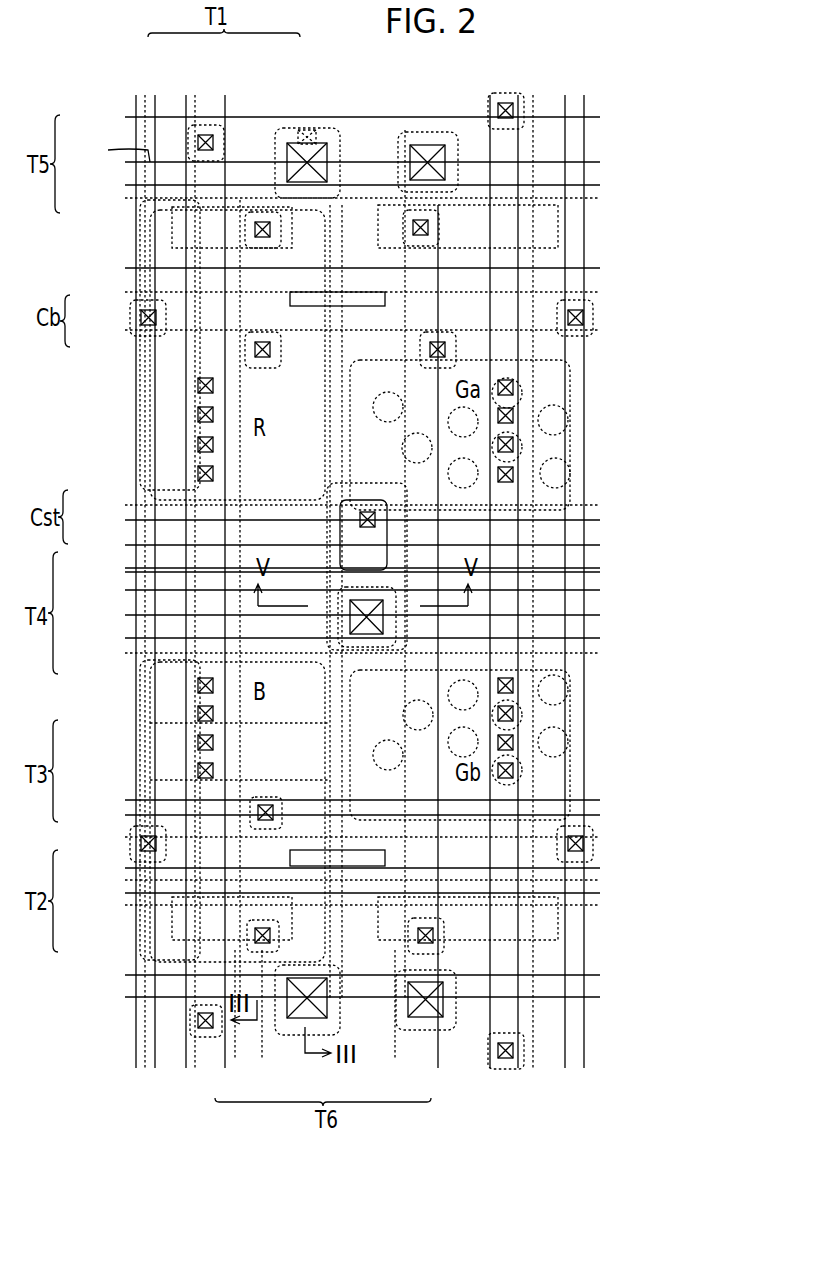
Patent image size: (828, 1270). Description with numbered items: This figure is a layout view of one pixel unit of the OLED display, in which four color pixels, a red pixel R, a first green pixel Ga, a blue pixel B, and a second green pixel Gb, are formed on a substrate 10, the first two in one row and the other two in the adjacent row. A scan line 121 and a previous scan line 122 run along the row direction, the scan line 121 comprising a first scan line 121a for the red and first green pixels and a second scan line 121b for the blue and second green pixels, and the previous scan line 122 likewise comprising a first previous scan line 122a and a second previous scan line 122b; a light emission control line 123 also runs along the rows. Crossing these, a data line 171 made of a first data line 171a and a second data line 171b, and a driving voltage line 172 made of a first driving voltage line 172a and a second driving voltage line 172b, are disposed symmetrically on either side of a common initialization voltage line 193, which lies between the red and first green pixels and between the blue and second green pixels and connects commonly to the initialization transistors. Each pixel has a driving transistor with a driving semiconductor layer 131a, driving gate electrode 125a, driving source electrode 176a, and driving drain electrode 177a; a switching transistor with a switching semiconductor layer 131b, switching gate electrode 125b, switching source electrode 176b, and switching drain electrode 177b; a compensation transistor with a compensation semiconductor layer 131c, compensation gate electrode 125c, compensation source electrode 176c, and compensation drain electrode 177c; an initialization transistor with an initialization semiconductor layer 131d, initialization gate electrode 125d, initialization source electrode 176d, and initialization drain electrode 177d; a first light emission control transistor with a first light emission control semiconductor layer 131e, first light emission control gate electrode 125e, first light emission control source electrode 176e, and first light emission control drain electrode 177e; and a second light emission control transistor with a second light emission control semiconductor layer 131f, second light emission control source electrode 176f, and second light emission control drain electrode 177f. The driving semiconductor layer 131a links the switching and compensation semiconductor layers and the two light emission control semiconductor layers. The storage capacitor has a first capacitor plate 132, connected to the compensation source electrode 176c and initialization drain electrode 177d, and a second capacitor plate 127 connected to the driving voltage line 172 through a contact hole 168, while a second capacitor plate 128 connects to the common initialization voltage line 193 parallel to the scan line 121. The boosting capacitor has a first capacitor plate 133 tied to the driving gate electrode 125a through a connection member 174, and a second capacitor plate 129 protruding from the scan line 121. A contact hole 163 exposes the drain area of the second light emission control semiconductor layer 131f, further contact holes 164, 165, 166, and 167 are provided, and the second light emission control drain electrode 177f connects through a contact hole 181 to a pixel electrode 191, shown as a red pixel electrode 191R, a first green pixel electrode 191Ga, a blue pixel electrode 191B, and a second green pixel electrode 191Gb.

The substrate 10 is at (585, 690).
The scan line 121 is at (693, 915).
The first scan line 121a is at (585, 279).
The second scan line 121b is at (585, 882).
The previous scan line 122 is at (683, 550).
The first previous scan line 122a is at (585, 568).
The second previous scan line 122b is at (585, 615).
The light emission control line 123 is at (570, 980).
The driving gate electrode 125a is at (235, 210).
The switching gate electrode 125b is at (140, 912).
The compensation gate electrode 125c is at (240, 805).
The initialization gate electrode 125d is at (250, 632).
The first light emission control gate electrode 125e is at (106, 147).
The second capacitor plate 127 is at (220, 532).
The second capacitor plate 128 is at (585, 660).
The second capacitor plate 129 is at (150, 330).
The driving semiconductor layer 131a is at (220, 200).
The switching semiconductor layer 131b is at (140, 886).
The compensation semiconductor layer 131c is at (260, 800).
The initialization semiconductor layer 131d is at (250, 612).
The first light emission control semiconductor layer 131e is at (136, 176).
The second light emission control semiconductor layer 131f is at (262, 1040).
The first capacitor plate 132 is at (240, 500).
The first capacitor plate 133 is at (150, 305).
The contact hole 163 is at (310, 130).
The contact hole 164 is at (140, 843).
The contact hole 165 is at (195, 1022).
The contact hole 166 is at (265, 805).
The contact hole 167 is at (272, 934).
The contact hole 168 is at (198, 445).
The data line 171 is at (693, 985).
The first data line 171a is at (136, 402).
The second data line 171b is at (585, 495).
The driving voltage line 172 is at (693, 1050).
The first driving voltage line 172a is at (185, 362).
The second driving voltage line 172b is at (565, 377).
The connection member 174 is at (240, 300).
The driving source electrode 176a is at (178, 215).
The switching source electrode 176b is at (140, 863).
The compensation source electrode 176c is at (250, 790).
The initialization source electrode 176d is at (260, 577).
The first light emission control source electrode 176e is at (150, 140).
The second light emission control source electrode 176f is at (375, 1030).
The driving drain electrode 177a is at (300, 150).
The switching drain electrode 177b is at (140, 940).
The compensation drain electrode 177c is at (240, 828).
The initialization drain electrode 177d is at (250, 654).
The first light emission control drain electrode 177e is at (136, 200).
The second light emission control drain electrode 177f is at (292, 1040).
The contact hole 181 is at (335, 152).
The pixel electrode 191 is at (697, 105).
The red pixel electrode 191R is at (165, 226).
The first green pixel electrode 191Ga is at (575, 447).
The blue pixel electrode 191B is at (175, 720).
The second green pixel electrode 191Gb is at (575, 712).
The common initialization voltage line 193 is at (585, 530).